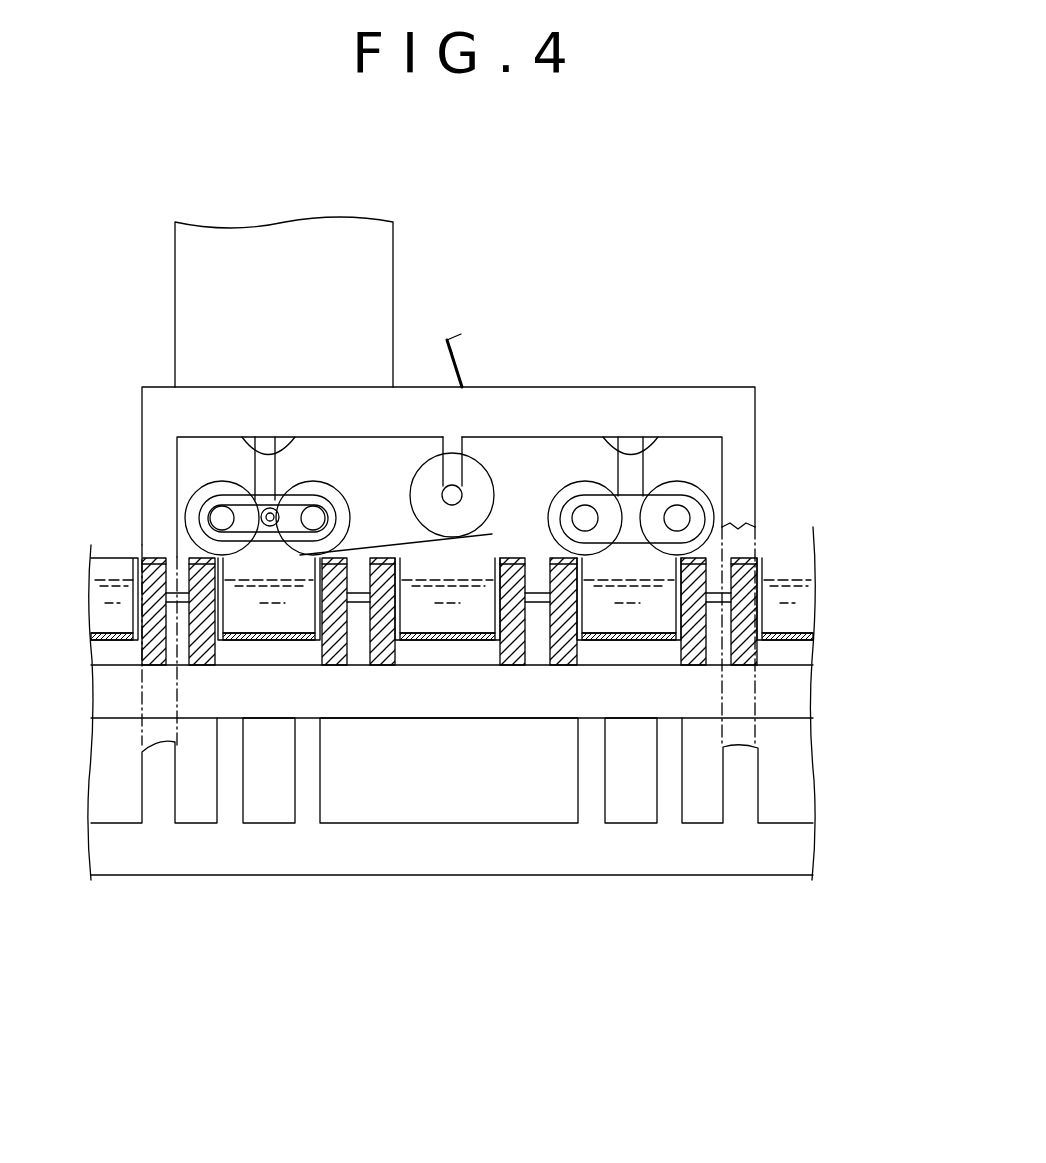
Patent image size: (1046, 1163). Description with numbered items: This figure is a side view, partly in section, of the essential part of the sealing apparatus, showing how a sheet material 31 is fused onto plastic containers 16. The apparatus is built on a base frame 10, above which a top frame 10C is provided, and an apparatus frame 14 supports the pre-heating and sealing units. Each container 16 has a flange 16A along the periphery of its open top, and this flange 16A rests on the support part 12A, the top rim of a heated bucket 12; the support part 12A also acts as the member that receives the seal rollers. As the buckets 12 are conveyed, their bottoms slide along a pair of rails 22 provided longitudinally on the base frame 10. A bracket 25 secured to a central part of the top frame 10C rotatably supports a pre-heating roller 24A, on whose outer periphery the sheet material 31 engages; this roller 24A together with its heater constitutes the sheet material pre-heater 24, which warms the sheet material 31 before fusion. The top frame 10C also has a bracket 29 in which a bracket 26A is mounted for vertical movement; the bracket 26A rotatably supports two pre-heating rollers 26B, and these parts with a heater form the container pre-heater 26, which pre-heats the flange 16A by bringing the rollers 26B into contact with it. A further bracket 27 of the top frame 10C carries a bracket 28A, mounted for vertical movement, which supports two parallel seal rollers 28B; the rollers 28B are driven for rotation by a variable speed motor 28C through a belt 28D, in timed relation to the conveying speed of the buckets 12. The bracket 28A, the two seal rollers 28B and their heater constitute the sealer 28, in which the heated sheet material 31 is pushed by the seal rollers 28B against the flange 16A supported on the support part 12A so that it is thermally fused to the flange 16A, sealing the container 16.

The base frame 10 is at (430, 882).
The top frame 10C is at (740, 440).
The bucket 12 is at (116, 651).
The support part 12A is at (136, 580).
The apparatus frame 14 is at (418, 813).
The container 16 is at (313, 640).
The flange 16A is at (173, 545).
The rail 22 is at (780, 696).
The sheet material pre-heater 24 is at (493, 477).
The pre-heating roller 24A is at (478, 494).
The bracket 25 is at (443, 457).
The container pre-heater 26 is at (657, 477).
The bracket 26A is at (657, 507).
The pre-heating roller 26B is at (703, 513).
The bracket 27 is at (276, 470).
The sealer 28 is at (235, 476).
The bracket 28A is at (338, 482).
The seal roller 28B is at (193, 518).
The motor 28C is at (187, 495).
The belt 28D is at (252, 462).
The bracket 29 is at (616, 460).
The sheet material 31 is at (456, 348).